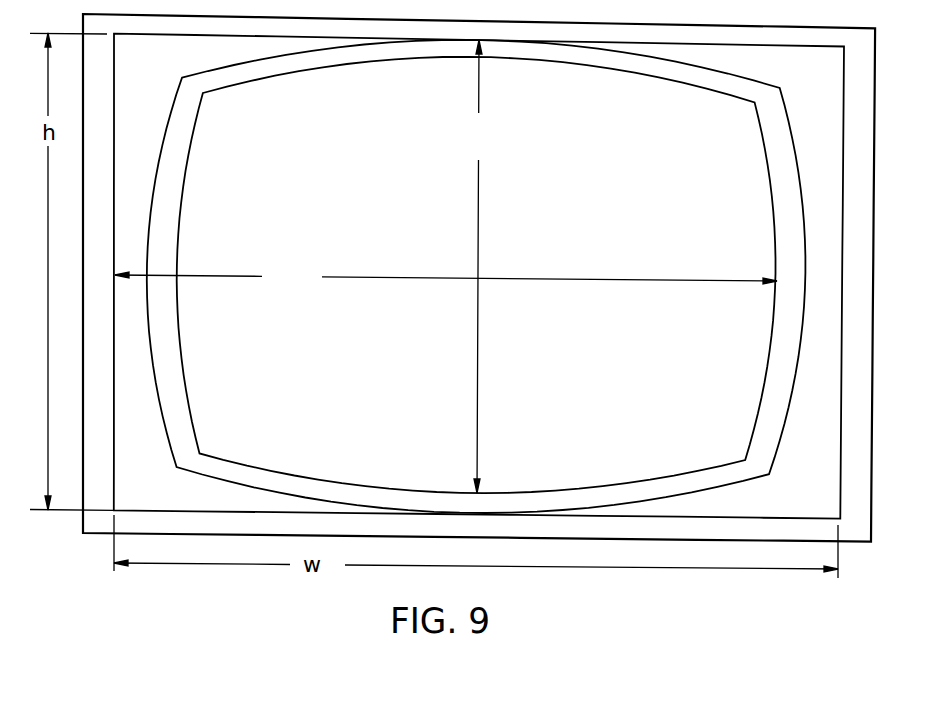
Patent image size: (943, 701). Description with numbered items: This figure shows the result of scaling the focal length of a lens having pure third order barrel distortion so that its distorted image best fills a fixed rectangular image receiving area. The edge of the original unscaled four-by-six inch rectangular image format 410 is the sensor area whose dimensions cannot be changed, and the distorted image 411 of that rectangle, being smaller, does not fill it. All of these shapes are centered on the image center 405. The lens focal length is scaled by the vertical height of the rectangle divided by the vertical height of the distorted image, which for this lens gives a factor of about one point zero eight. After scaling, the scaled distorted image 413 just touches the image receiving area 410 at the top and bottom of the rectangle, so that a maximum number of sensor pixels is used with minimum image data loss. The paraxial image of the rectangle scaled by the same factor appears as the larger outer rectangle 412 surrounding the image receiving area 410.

The image center 405 is at (480, 277).
The edge of rectangular image format 410 is at (113, 238).
The distorted image 411 is at (307, 70).
The scaled paraxial image 412 is at (81, 330).
The scaled distorted image 413 is at (157, 191).